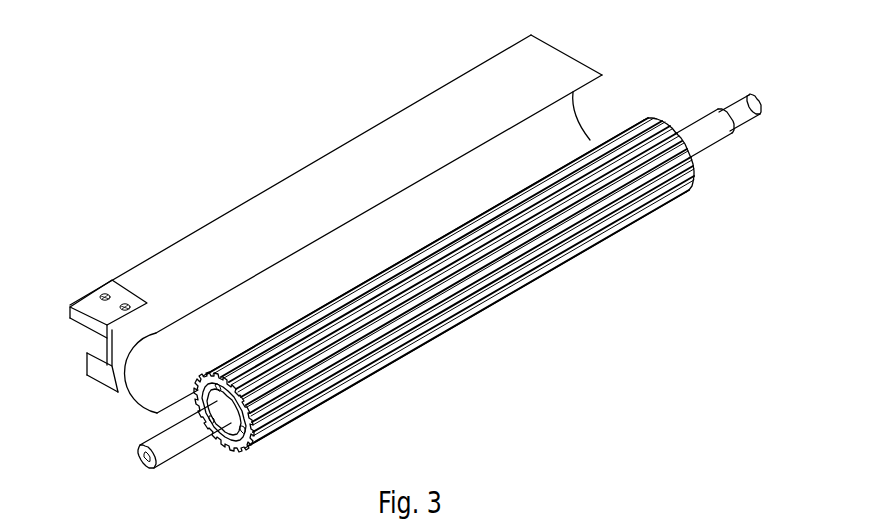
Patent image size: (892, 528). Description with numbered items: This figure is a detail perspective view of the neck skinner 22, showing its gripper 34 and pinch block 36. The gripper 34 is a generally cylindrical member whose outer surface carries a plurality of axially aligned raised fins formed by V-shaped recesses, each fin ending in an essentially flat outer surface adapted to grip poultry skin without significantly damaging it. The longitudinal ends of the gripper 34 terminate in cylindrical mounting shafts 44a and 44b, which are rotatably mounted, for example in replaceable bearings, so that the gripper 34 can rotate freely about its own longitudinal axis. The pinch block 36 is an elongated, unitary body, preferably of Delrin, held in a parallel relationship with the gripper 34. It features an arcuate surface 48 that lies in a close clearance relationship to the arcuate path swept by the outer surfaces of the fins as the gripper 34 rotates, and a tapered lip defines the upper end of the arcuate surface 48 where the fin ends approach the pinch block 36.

The neck skinner 22 is at (548, 387).
The gripper 34 is at (537, 262).
The pinch block 36 is at (325, 183).
The cylindrical mounting shaft 44a is at (175, 443).
The cylindrical mounting shaft 44b is at (708, 132).
The arcuate surface 48 is at (147, 370).